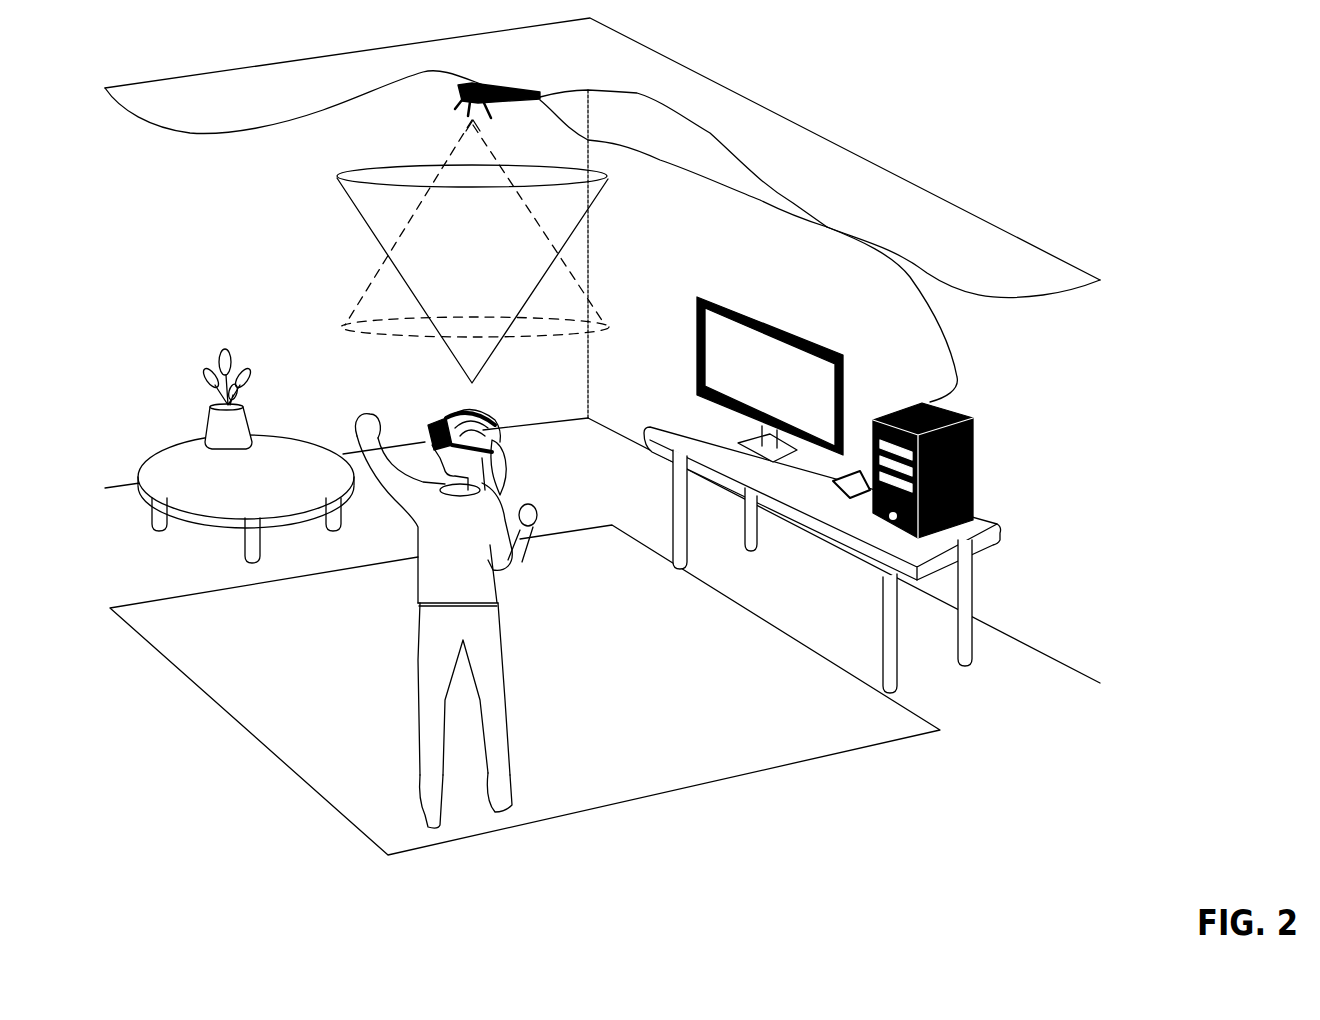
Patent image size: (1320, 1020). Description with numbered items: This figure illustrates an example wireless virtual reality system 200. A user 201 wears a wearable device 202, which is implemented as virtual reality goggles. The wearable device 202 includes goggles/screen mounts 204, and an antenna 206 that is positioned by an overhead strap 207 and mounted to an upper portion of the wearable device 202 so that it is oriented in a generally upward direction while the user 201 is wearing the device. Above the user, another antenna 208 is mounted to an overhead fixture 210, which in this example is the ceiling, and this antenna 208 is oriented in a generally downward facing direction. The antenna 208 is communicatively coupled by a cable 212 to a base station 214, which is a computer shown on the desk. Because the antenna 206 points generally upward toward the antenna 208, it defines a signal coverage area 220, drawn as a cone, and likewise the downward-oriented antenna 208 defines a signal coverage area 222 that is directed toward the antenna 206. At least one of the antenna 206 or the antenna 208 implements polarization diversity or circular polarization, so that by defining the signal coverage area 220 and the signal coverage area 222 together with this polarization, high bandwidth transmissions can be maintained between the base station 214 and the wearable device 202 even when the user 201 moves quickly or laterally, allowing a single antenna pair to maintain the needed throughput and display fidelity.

The wireless virtual reality system 200 is at (812, 64).
The user 201 is at (480, 601).
The wearable device 202 is at (484, 434).
The goggles/screen mounts 204 is at (437, 422).
The antenna 206 is at (480, 410).
The overhead strap 207 is at (502, 433).
The antenna 208 is at (460, 105).
The overhead fixture 210 is at (218, 85).
The cable 212 is at (957, 345).
The base station 214 is at (872, 427).
The signal coverage area 220 is at (343, 177).
The signal coverage area 222 is at (358, 326).